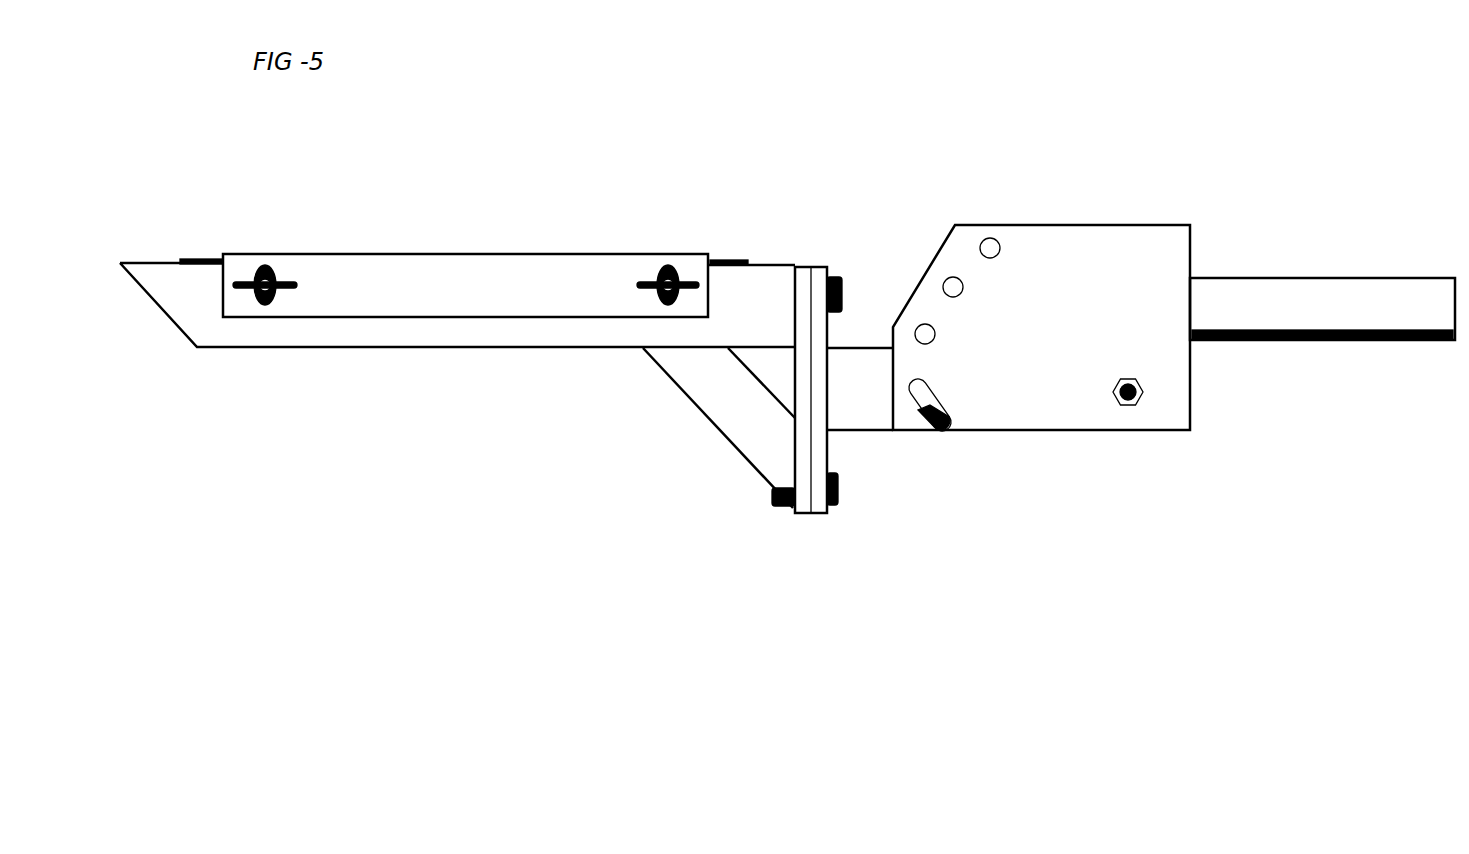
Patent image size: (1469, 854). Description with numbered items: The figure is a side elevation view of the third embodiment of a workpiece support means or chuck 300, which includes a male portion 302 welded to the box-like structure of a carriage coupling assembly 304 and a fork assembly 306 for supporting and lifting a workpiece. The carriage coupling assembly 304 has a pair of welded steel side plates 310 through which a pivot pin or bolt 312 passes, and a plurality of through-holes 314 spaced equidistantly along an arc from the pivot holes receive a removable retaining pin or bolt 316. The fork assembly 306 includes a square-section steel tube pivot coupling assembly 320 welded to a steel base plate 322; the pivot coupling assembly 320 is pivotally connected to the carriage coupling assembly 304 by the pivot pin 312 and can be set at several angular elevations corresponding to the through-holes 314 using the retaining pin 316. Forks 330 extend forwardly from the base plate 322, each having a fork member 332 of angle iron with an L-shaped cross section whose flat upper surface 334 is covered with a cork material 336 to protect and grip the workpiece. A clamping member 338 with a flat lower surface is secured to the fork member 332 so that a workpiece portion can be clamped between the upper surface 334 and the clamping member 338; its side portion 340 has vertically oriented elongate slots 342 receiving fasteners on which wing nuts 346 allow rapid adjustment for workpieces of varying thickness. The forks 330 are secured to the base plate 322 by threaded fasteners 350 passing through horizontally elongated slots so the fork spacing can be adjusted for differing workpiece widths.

The workpiece support means or chuck 300 is at (527, 220).
The male portion 302 is at (1343, 285).
The carriage coupling assembly 304 is at (1183, 243).
The fork assembly 306 is at (773, 267).
The side plates 310 is at (1053, 240).
The pivot pin or bolt 312 is at (1122, 410).
The through-holes 314 is at (917, 380).
The retaining pin or bolt 316 is at (945, 430).
The pivot coupling assembly 320 is at (872, 430).
The base plate 322 is at (818, 280).
The forks 330 is at (262, 318).
The fork member 332 is at (410, 348).
The upper surface 334 is at (163, 260).
The cork material 336 is at (727, 265).
The clamping member 338 is at (393, 270).
The side portion 340 is at (513, 302).
The elongate slots 342 is at (265, 262).
The wing nuts 346 is at (296, 290).
The threaded fasteners 350 is at (840, 297).